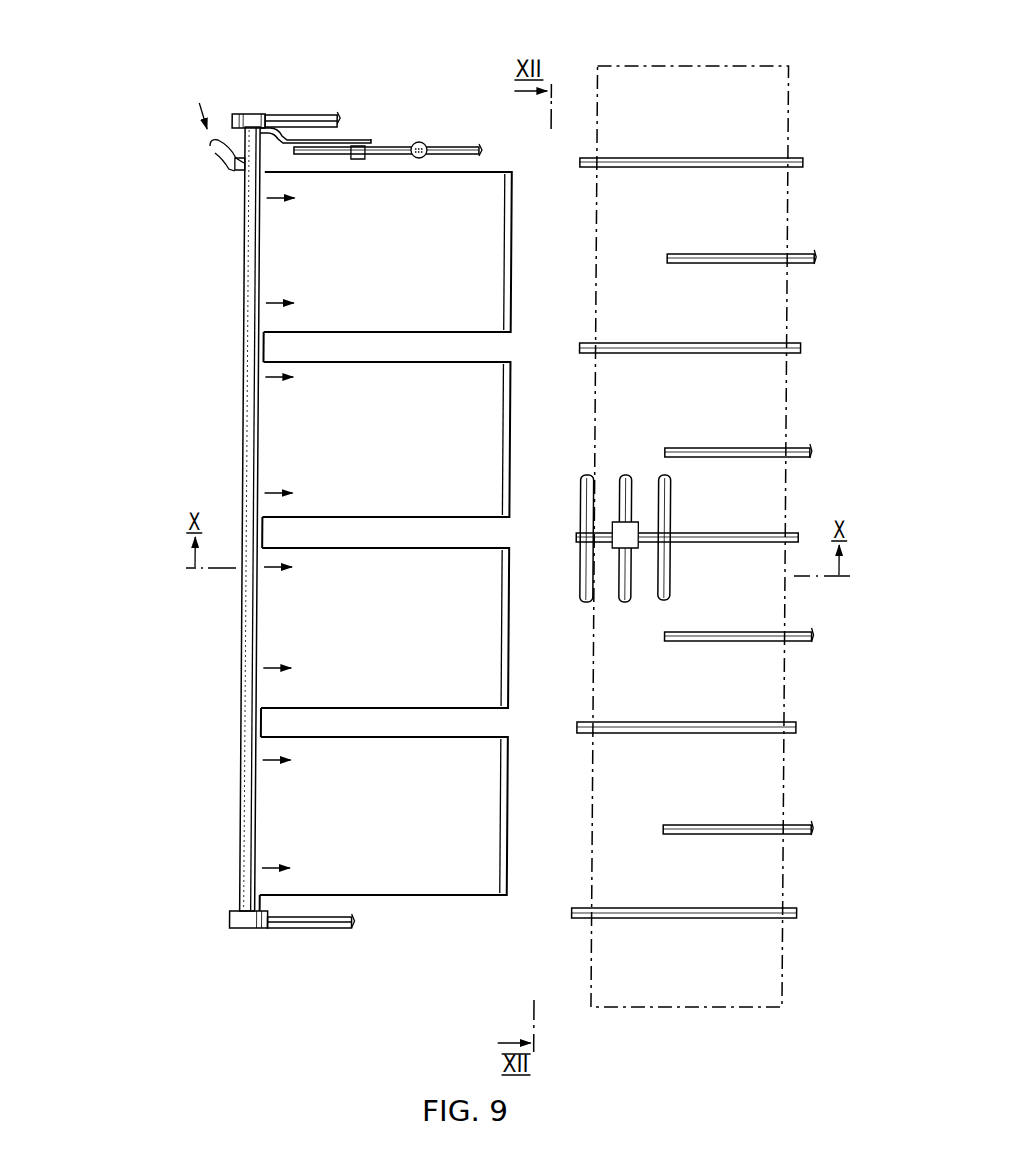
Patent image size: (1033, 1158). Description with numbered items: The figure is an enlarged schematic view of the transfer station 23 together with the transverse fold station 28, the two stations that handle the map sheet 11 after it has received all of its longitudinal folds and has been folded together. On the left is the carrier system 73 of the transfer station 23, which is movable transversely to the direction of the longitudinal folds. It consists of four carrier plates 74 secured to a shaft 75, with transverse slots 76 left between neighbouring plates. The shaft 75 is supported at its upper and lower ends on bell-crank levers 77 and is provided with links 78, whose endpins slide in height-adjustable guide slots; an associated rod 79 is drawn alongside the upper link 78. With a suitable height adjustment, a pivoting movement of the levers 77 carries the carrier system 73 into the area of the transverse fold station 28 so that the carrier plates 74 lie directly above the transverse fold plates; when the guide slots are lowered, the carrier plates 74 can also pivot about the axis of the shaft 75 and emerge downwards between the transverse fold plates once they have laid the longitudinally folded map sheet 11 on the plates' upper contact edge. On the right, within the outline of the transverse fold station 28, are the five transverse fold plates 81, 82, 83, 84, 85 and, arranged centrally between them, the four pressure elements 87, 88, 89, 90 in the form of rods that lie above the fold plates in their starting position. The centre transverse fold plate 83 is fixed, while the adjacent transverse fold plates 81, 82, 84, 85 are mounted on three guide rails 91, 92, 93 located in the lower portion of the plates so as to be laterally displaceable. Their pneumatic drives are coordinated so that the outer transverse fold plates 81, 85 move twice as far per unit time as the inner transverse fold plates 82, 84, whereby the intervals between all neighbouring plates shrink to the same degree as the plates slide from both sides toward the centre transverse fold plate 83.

The map sheet 11 is at (650, 788).
The transfer station 23 is at (353, 527).
The transverse fold station 28 is at (692, 503).
The carrier system 73 is at (416, 910).
The carrier plates 74 is at (397, 263).
The shaft 75 is at (244, 735).
The transverse slots 76 is at (496, 350).
The bell-crank levers 77 is at (298, 114).
The links 78 is at (335, 138).
The actuating rod 79 is at (380, 148).
The transverse fold plate 81 is at (804, 158).
The transverse fold plate 82 is at (800, 343).
The centre transverse fold plate 83 is at (800, 533).
The transverse fold plate 84 is at (797, 722).
The transverse fold plate 85 is at (800, 908).
The pressure element 87 is at (802, 251).
The pressure element 88 is at (802, 448).
The pressure element 89 is at (802, 632).
The pressure element 90 is at (798, 825).
The guide rail 91 is at (586, 478).
The guide rail 92 is at (630, 482).
The guide rail 93 is at (674, 491).